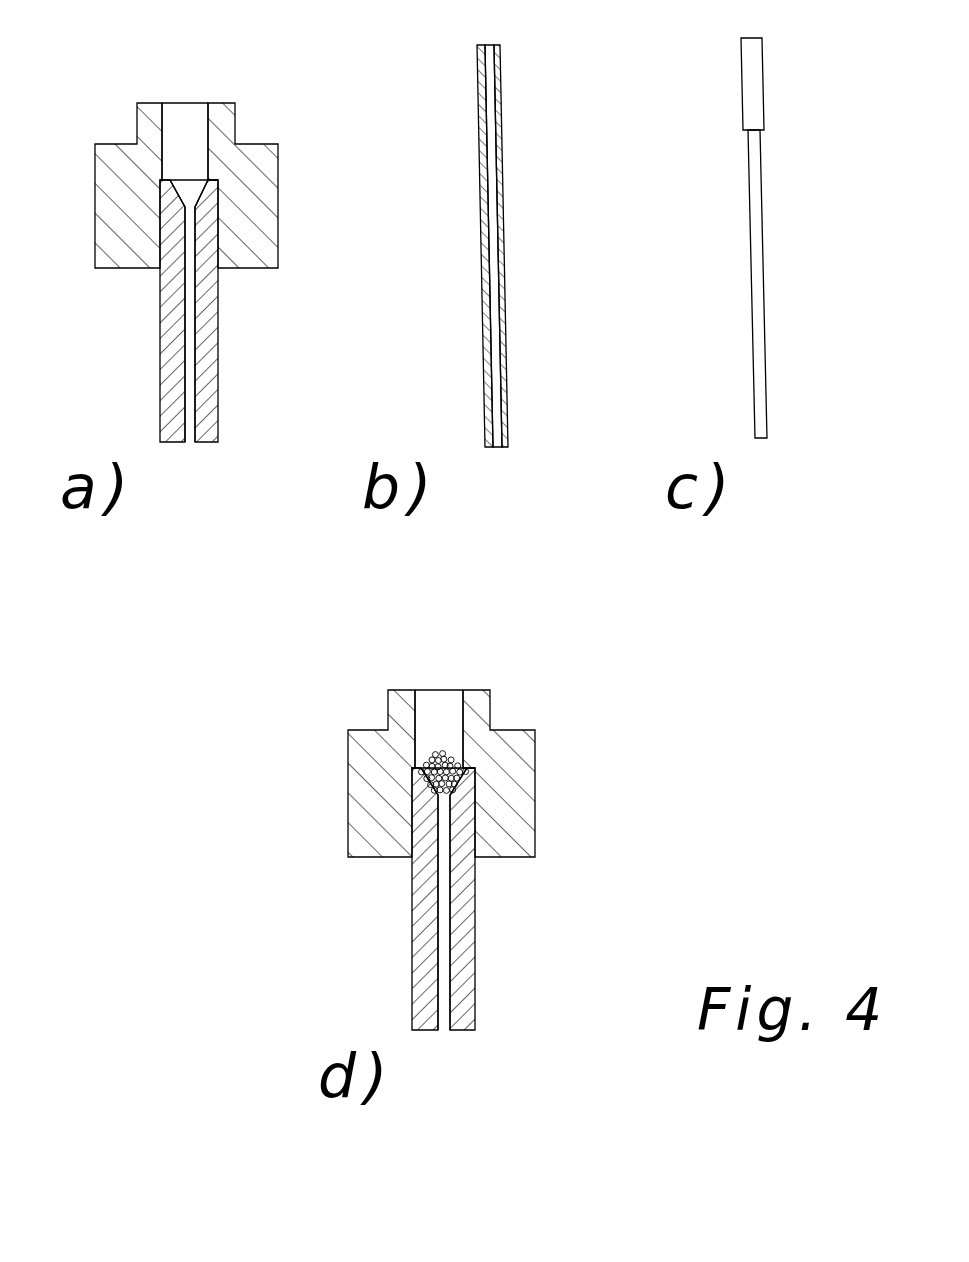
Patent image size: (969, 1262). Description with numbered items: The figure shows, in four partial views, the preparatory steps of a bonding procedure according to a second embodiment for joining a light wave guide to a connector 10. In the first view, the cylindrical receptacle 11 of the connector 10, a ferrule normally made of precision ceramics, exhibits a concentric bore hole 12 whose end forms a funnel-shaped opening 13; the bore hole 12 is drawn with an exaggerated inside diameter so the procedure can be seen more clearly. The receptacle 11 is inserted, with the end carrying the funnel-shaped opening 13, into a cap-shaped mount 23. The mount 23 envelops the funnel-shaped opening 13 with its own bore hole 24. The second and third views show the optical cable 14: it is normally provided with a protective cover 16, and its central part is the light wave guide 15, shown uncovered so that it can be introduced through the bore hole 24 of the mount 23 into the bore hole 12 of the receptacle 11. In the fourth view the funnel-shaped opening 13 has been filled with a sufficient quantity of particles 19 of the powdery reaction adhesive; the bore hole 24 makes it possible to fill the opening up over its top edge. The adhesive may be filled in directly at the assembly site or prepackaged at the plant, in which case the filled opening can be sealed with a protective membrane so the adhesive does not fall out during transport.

The connector 10 is at (275, 118).
The receptacle 11 is at (175, 425).
The bore hole 12 is at (192, 382).
The funnel-shaped opening 13 is at (180, 160).
The optical cable 14 is at (532, 165).
The light wave guide 15 is at (495, 363).
The cover 16 is at (507, 257).
The particles 19 is at (447, 748).
The mount 23 is at (267, 210).
The bore hole 24 is at (202, 137).